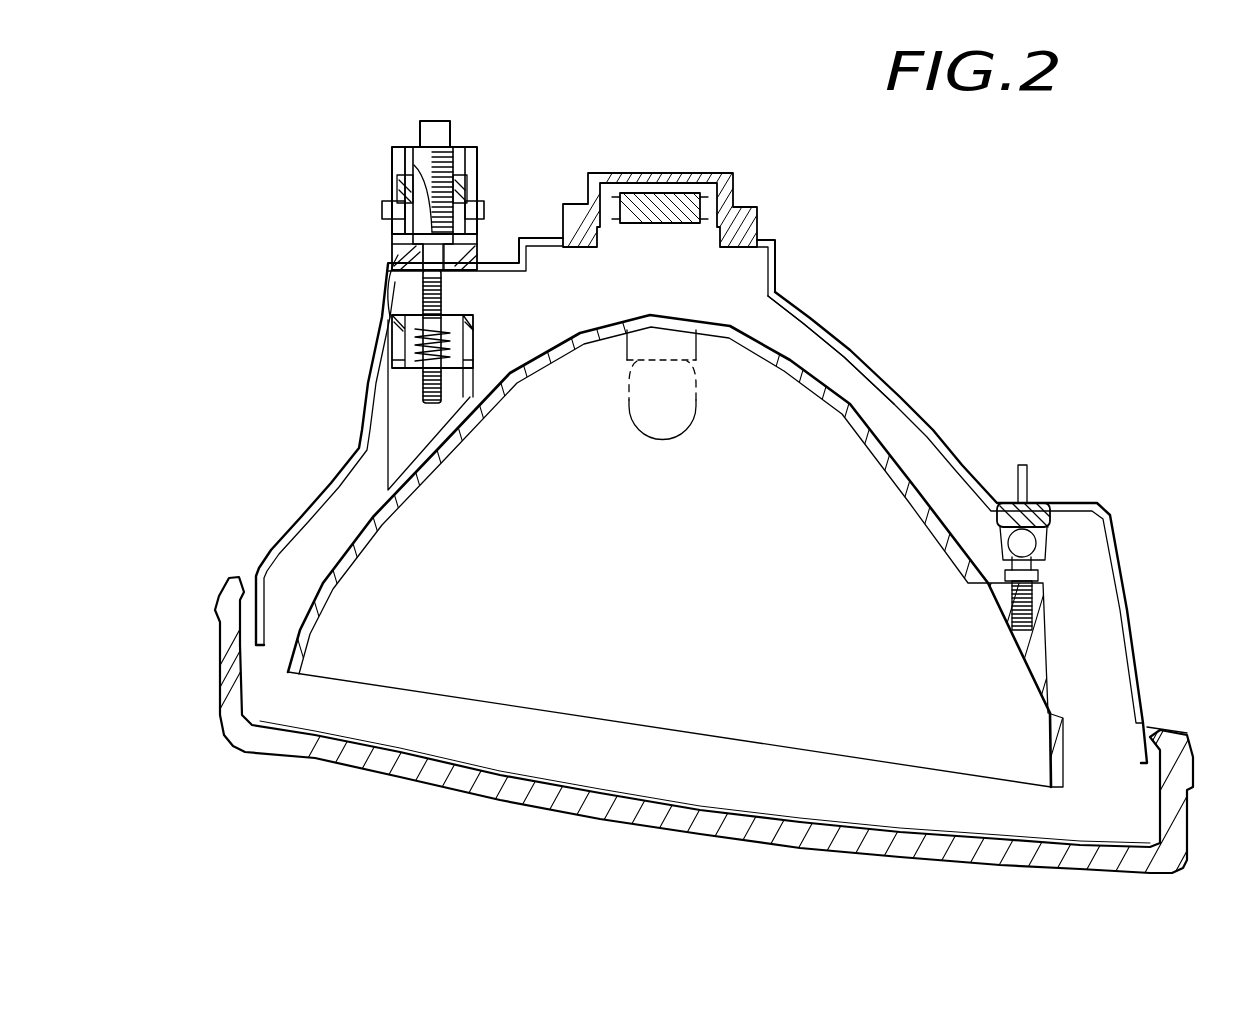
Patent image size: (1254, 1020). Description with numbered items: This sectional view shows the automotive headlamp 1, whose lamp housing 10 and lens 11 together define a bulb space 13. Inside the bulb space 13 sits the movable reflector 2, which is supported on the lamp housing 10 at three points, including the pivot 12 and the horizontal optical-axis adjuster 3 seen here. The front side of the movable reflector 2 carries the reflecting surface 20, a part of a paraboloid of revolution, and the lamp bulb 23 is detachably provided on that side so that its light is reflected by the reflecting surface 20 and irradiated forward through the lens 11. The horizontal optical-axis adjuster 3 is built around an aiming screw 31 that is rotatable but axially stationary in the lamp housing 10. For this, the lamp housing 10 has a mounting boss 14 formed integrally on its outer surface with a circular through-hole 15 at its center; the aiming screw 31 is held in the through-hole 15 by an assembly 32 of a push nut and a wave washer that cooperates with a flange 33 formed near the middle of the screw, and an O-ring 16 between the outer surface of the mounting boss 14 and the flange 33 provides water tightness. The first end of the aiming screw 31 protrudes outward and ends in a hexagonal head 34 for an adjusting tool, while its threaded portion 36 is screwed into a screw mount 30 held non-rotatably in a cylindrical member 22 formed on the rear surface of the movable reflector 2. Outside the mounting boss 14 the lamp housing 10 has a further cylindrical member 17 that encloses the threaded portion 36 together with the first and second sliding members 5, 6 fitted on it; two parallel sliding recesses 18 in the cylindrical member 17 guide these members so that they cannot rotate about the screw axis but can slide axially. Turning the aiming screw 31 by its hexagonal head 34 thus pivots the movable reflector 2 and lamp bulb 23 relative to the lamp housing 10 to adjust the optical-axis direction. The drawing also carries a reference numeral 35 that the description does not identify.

The automotive headlamp 1 is at (1067, 495).
The movable reflector 2 is at (905, 463).
The horizontal optical-axis adjuster 3 is at (434, 115).
The first sliding member 5 is at (483, 220).
The second sliding member 6 is at (468, 195).
The lamp housing 10 is at (969, 459).
The lens 11 is at (232, 748).
The pivot 12 is at (1050, 558).
The bulb space 13 is at (733, 302).
The mounting boss 14 is at (385, 285).
The circular through-hole 15 is at (390, 264).
The O-ring 16 is at (413, 246).
The cylindrical member 17 is at (400, 253).
The sliding recesses 18 is at (400, 153).
The reflecting surface 20 is at (850, 393).
The cylindrical member 22 is at (410, 393).
The lamp bulb 23 is at (697, 384).
The screw mount 30 is at (412, 347).
The aiming screw 31 is at (412, 125).
The assembly of a push nut and a wave washer 32 is at (387, 300).
The flange 33 is at (420, 175).
The hexagonal head 34 is at (442, 118).
The adjusting screw 35 is at (423, 403).
The threaded portion 36 is at (457, 153).